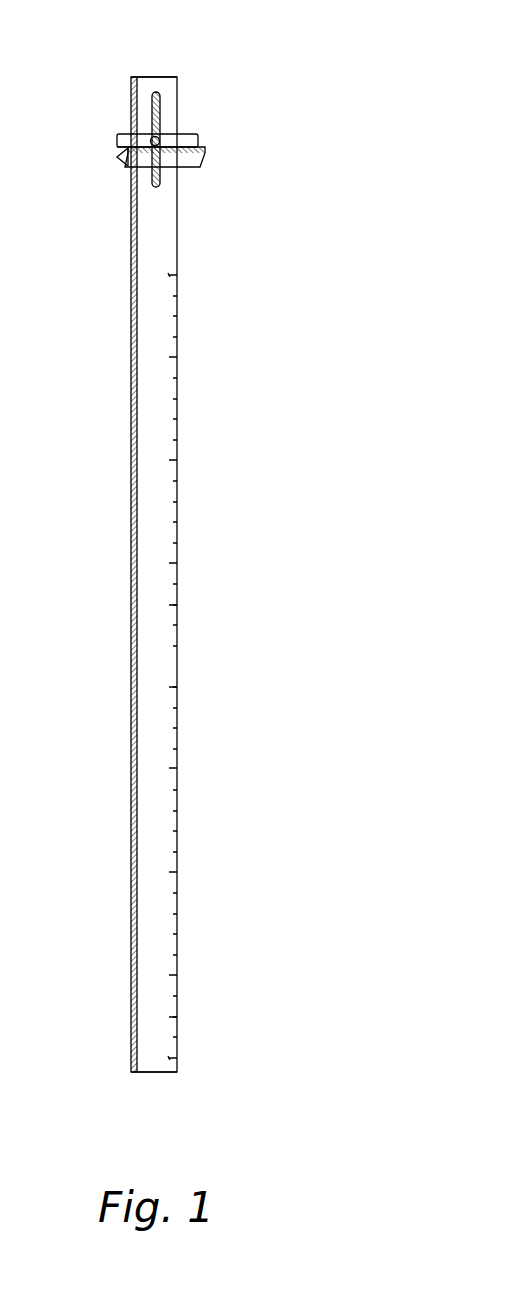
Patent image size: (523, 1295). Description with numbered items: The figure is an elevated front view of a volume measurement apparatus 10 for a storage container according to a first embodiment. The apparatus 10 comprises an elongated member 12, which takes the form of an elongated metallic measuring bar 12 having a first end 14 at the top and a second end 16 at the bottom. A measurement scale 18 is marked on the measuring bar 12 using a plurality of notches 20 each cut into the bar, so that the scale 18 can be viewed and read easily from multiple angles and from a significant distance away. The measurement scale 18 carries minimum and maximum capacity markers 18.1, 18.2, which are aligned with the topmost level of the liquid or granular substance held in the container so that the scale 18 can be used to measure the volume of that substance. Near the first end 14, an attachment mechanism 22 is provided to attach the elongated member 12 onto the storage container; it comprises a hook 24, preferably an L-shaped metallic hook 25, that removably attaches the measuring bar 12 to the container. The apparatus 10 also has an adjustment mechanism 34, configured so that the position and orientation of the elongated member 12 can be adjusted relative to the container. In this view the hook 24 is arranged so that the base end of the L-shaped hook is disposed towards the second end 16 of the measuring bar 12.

The volume measurement apparatus 10 is at (300, 258).
The elongated member 12 is at (145, 580).
The first end 14 is at (157, 77).
The second end 16 is at (160, 1073).
The measurement scale 18 is at (177, 357).
The minimum capacity marker 18.1 is at (177, 1058).
The maximum capacity marker 18.2 is at (177, 275).
The notches 20 is at (177, 768).
The attachment mechanism 22 is at (198, 146).
The hook 24 is at (128, 140).
The L-shaped metallic hook 25 is at (128, 148).
The adjustment mechanism 34 is at (157, 108).